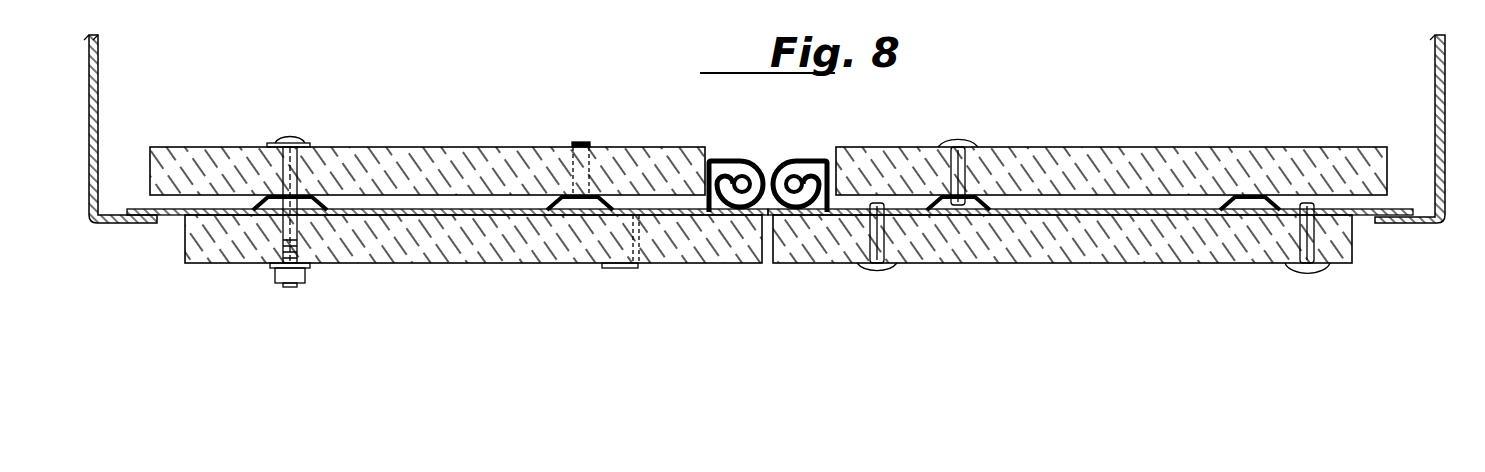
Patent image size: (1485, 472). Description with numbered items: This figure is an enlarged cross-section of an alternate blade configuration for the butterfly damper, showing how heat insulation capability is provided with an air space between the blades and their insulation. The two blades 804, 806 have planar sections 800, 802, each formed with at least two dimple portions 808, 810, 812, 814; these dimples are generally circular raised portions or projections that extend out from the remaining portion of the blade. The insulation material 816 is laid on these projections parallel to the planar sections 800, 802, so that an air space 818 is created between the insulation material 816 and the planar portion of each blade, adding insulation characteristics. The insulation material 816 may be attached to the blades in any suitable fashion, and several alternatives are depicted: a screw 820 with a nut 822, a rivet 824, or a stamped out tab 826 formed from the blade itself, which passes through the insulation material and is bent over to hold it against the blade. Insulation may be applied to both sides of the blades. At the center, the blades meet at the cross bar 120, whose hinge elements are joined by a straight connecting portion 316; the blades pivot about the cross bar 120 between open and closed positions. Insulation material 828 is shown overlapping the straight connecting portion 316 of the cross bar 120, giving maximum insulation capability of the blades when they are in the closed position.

The cross bar 120 is at (815, 214).
The straight connecting portion 316 is at (780, 216).
The planar section 800 is at (480, 217).
The planar section 802 is at (1107, 214).
The blade 804 is at (413, 214).
The blade 806 is at (1142, 216).
The dimple portion 808 is at (262, 206).
The dimple portion 810 is at (603, 196).
The dimple portion 812 is at (985, 200).
The dimple portion 814 is at (1252, 196).
The insulation material 816 is at (395, 170).
The air space 818 is at (500, 200).
The screw 820 is at (292, 141).
The nut 822 is at (272, 277).
The rivet 824 is at (955, 136).
The stamped out tab 826 is at (582, 141).
The insulation material 828 is at (1262, 240).